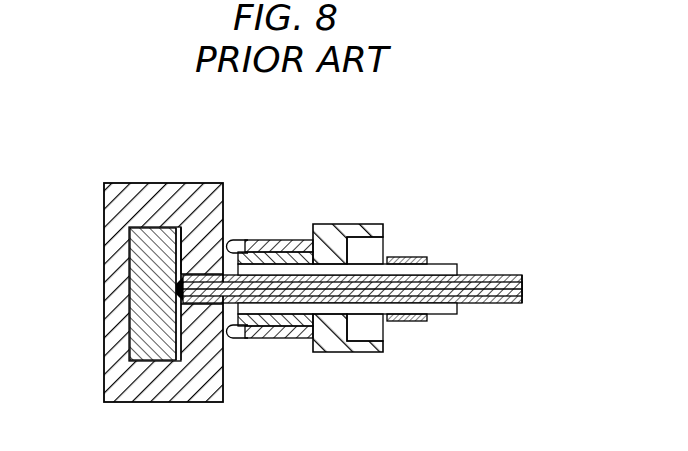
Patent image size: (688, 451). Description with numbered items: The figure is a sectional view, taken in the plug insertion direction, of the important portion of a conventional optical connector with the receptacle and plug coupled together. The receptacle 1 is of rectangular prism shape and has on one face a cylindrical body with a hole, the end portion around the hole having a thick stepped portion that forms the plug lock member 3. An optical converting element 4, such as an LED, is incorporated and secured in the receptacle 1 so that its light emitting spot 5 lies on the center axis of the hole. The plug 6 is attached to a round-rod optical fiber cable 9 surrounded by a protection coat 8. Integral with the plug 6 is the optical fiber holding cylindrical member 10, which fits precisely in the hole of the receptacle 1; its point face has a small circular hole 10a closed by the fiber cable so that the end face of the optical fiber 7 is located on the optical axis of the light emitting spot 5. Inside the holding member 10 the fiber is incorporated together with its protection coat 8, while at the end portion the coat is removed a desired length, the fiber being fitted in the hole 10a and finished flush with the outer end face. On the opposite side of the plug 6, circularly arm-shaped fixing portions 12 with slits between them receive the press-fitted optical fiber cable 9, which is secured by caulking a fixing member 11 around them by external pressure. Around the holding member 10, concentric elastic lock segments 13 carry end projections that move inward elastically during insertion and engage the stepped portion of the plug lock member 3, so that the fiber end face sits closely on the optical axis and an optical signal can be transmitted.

The receptacle 1 is at (107, 176).
The plug lock member 3 is at (263, 238).
The optical converting element 4 is at (147, 227).
The light emitting spot 5 is at (179, 296).
The plug 6 is at (333, 214).
The optical fiber 7 is at (523, 284).
The protection coat 8 is at (510, 304).
The optical fiber cable 9 is at (504, 266).
The optical fiber holding cylindrical member 10 is at (184, 326).
The small circular hole 10a is at (187, 270).
The fixing member 11 is at (404, 263).
The fixing portions 12 is at (445, 257).
The elastic lock segments 13 is at (274, 340).